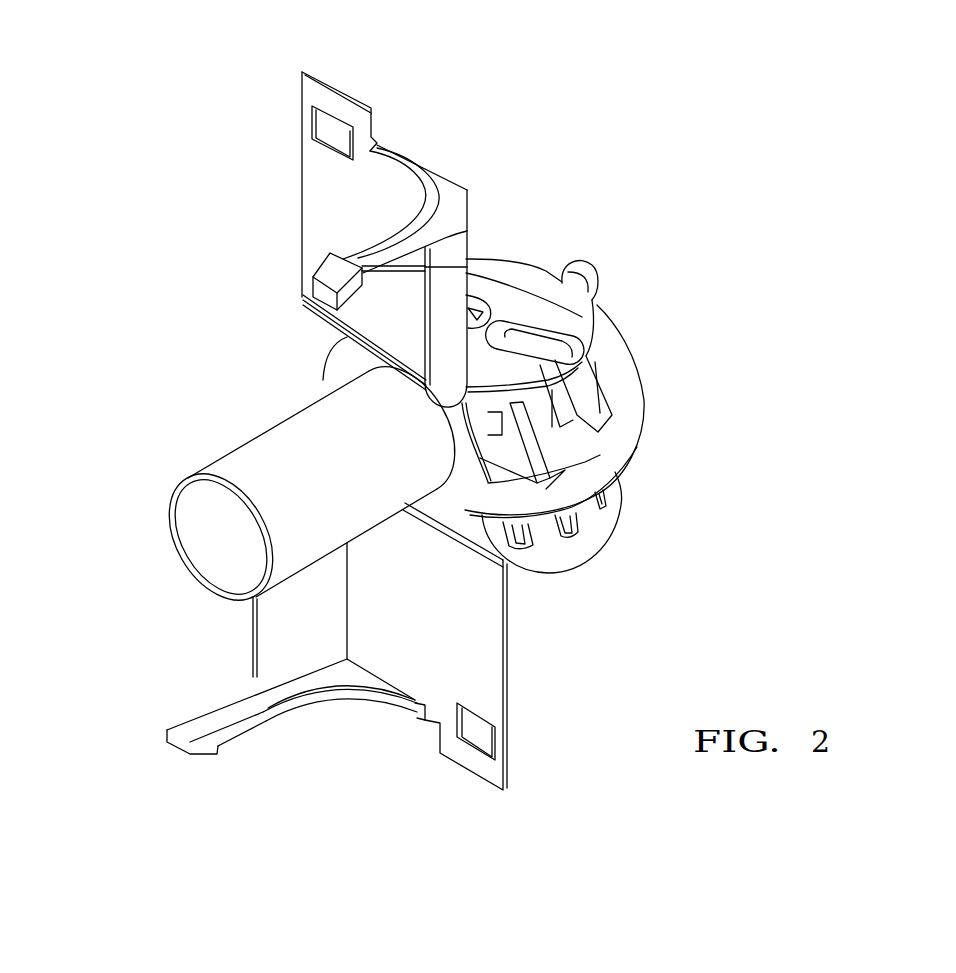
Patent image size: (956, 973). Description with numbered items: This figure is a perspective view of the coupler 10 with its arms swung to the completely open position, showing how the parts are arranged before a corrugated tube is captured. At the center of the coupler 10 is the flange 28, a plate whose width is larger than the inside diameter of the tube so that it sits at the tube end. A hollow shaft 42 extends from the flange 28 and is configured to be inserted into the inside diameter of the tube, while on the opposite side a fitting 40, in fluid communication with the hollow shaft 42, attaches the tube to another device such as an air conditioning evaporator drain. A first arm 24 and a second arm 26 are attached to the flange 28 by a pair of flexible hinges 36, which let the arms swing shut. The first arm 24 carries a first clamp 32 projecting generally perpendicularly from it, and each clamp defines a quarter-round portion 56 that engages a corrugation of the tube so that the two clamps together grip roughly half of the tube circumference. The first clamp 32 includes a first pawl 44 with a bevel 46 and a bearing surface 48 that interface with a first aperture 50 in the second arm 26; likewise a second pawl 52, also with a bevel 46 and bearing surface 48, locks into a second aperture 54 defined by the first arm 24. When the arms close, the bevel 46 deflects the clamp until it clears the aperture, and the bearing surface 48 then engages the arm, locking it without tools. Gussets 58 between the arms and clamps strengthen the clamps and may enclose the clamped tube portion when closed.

The coupler 10 is at (633, 163).
The first arm 24 is at (327, 180).
The second arm 26 is at (253, 720).
The flange 28 is at (560, 465).
The first clamp 32 is at (438, 213).
The flexible hinges 36 is at (352, 335).
The fitting 40 is at (593, 535).
The hollow shaft 42 is at (368, 507).
The first pawl 44 is at (362, 267).
The bevel 46 is at (327, 275).
The bearing surface 48 is at (572, 303).
The first aperture 50 is at (473, 730).
The second pawl 52 is at (185, 722).
The second aperture 54 is at (327, 127).
The quarter-round portion 56 is at (415, 180).
The gussets 58 is at (452, 247).